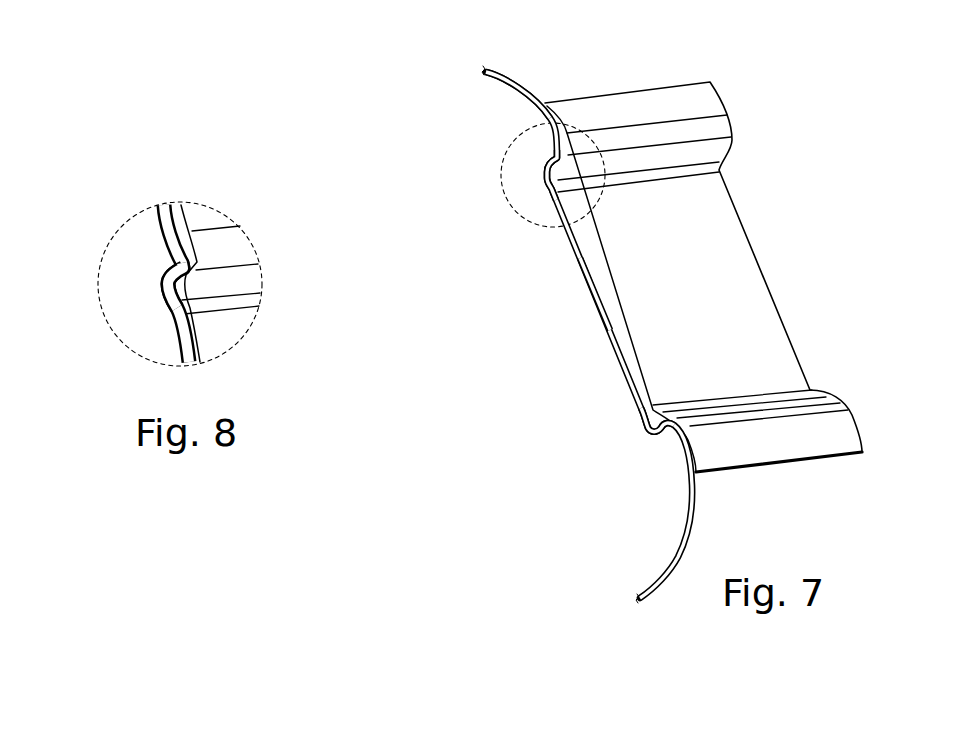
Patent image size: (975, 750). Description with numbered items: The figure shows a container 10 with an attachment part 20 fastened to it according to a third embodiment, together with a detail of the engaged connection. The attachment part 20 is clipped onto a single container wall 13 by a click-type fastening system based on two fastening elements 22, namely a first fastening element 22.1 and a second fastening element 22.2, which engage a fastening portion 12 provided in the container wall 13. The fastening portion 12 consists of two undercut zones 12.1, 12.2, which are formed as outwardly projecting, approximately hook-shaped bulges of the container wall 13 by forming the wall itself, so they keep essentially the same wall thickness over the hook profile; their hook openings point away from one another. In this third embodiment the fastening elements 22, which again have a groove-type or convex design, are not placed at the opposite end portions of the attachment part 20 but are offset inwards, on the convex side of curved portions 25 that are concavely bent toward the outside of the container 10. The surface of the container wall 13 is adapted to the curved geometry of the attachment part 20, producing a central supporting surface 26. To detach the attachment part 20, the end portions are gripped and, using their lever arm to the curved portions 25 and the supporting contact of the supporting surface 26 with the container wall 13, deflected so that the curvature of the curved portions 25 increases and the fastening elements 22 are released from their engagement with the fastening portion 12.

In FIG. 7, the container 10 is at (550, 88).
In FIG. 7, the container wall 13 is at (512, 84).
In FIG. 8, the container wall 13 is at (166, 217).
In FIG. 8, the fastening portion 12 is at (163, 280).
In FIG. 7, the first undercut zone 12.1 is at (653, 430).
In FIG. 7, the second undercut zone 12.2 is at (543, 168).
In FIG. 7, the attachment part 20 is at (765, 247).
In FIG. 8, the fastening element 22 is at (176, 286).
In FIG. 7, the first fastening element 22.1 is at (767, 410).
In FIG. 7, the second fastening element 22.2 is at (632, 202).
In FIG. 7, the curved portion 25 is at (667, 407).
In FIG. 7, the supporting surface 26 is at (578, 268).